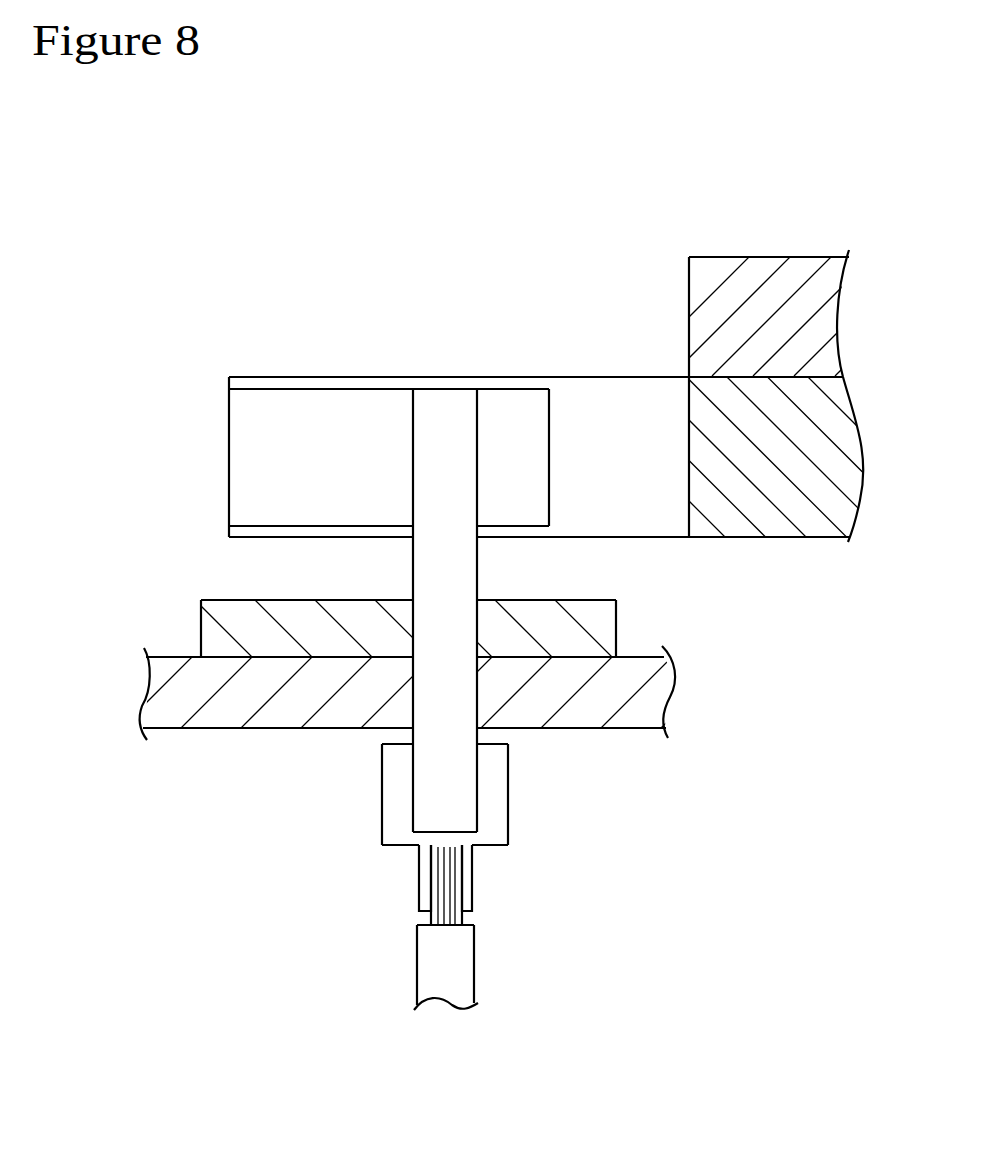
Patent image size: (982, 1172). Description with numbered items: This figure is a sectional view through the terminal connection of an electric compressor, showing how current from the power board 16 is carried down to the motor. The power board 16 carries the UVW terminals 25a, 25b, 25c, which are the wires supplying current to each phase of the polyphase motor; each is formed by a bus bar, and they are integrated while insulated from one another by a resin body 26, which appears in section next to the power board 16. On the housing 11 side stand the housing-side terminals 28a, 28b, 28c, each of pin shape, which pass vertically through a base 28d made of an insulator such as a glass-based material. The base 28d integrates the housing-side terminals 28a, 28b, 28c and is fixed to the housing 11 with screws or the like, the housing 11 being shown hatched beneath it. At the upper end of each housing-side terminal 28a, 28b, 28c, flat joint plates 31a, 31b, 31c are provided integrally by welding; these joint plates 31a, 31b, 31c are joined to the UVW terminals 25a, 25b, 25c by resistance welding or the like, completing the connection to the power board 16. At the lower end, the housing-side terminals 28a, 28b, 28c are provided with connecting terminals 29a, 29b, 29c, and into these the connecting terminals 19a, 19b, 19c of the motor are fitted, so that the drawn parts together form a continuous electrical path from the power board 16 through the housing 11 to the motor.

The housing 11 is at (168, 656).
The power board 16 is at (710, 280).
The connecting terminal of the motor 19a is at (526, 827).
The connecting terminal of the motor 19b is at (445, 827).
The connecting terminal of the motor 19c is at (487, 825).
The UVW terminal 25a is at (622, 492).
The UVW terminal 25b is at (583, 457).
The UVW terminal 25c is at (658, 515).
The resin body 26 is at (787, 513).
The housing-side terminal 28a is at (486, 571).
The housing-side terminal 28b is at (445, 610).
The housing-side terminal 28c is at (463, 400).
The base 28d is at (224, 600).
The connecting terminal 29a is at (541, 889).
The connecting terminal 29b is at (445, 921).
The connecting terminal 29c is at (445, 921).
The joint plate 31a is at (389, 423).
The joint plate 31b is at (389, 457).
The joint plate 31c is at (293, 387).